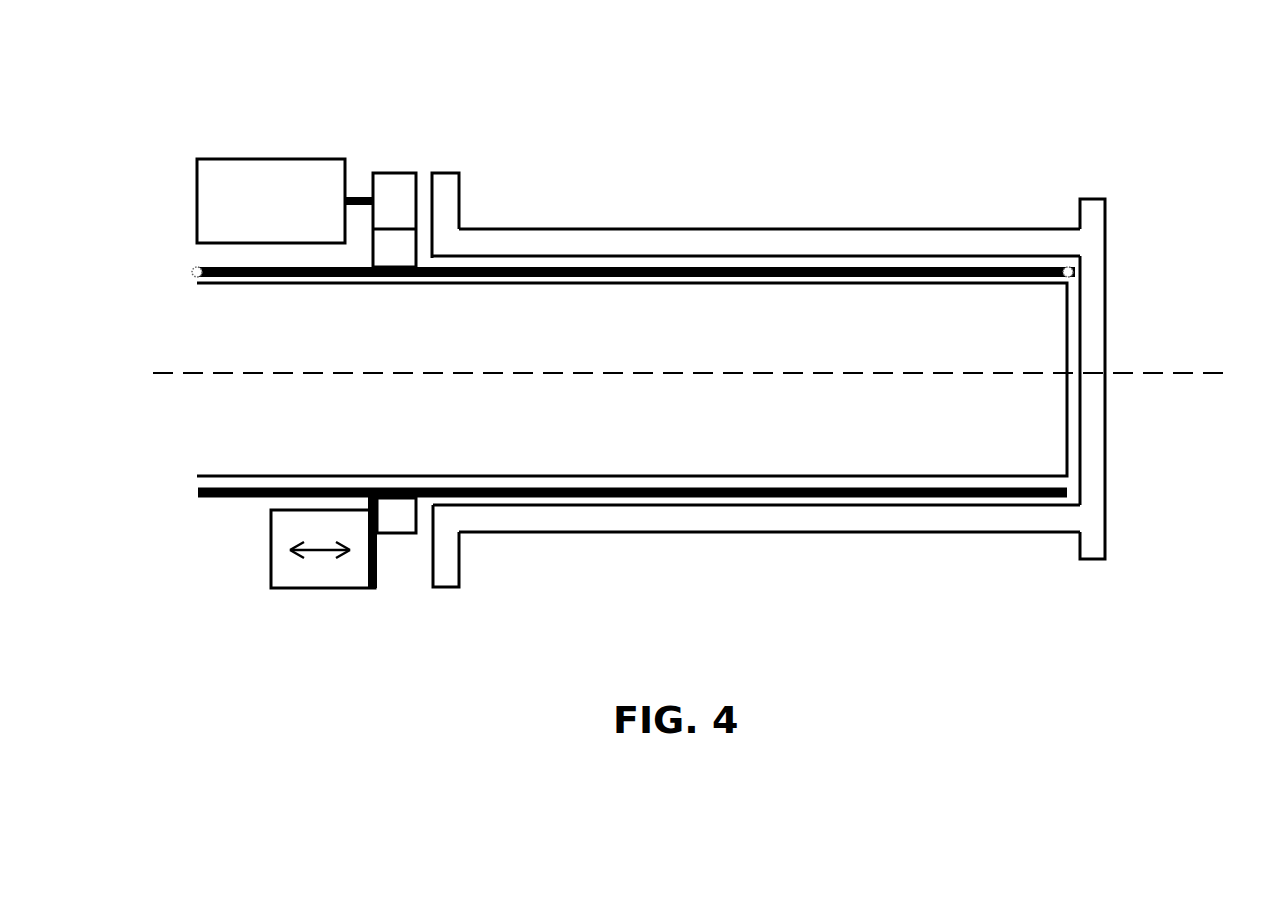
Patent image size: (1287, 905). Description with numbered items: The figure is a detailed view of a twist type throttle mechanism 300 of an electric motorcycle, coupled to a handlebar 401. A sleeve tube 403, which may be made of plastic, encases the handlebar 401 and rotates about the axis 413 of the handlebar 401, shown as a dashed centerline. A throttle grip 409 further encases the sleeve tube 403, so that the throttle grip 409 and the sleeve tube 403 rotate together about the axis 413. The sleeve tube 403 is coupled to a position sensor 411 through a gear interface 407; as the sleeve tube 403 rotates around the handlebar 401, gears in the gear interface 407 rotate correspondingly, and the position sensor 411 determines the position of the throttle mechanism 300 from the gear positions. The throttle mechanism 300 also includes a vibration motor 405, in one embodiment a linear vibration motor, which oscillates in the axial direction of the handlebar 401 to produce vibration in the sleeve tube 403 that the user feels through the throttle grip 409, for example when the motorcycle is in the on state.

The throttle mechanism 300 is at (657, 57).
The handlebar 401 is at (1027, 432).
The sleeve tube 403 is at (680, 498).
The vibration motor 405 is at (270, 533).
The gear interface 407 is at (415, 157).
The throttle grip 409 is at (882, 215).
The position sensor 411 is at (234, 146).
The axis 413 is at (715, 374).